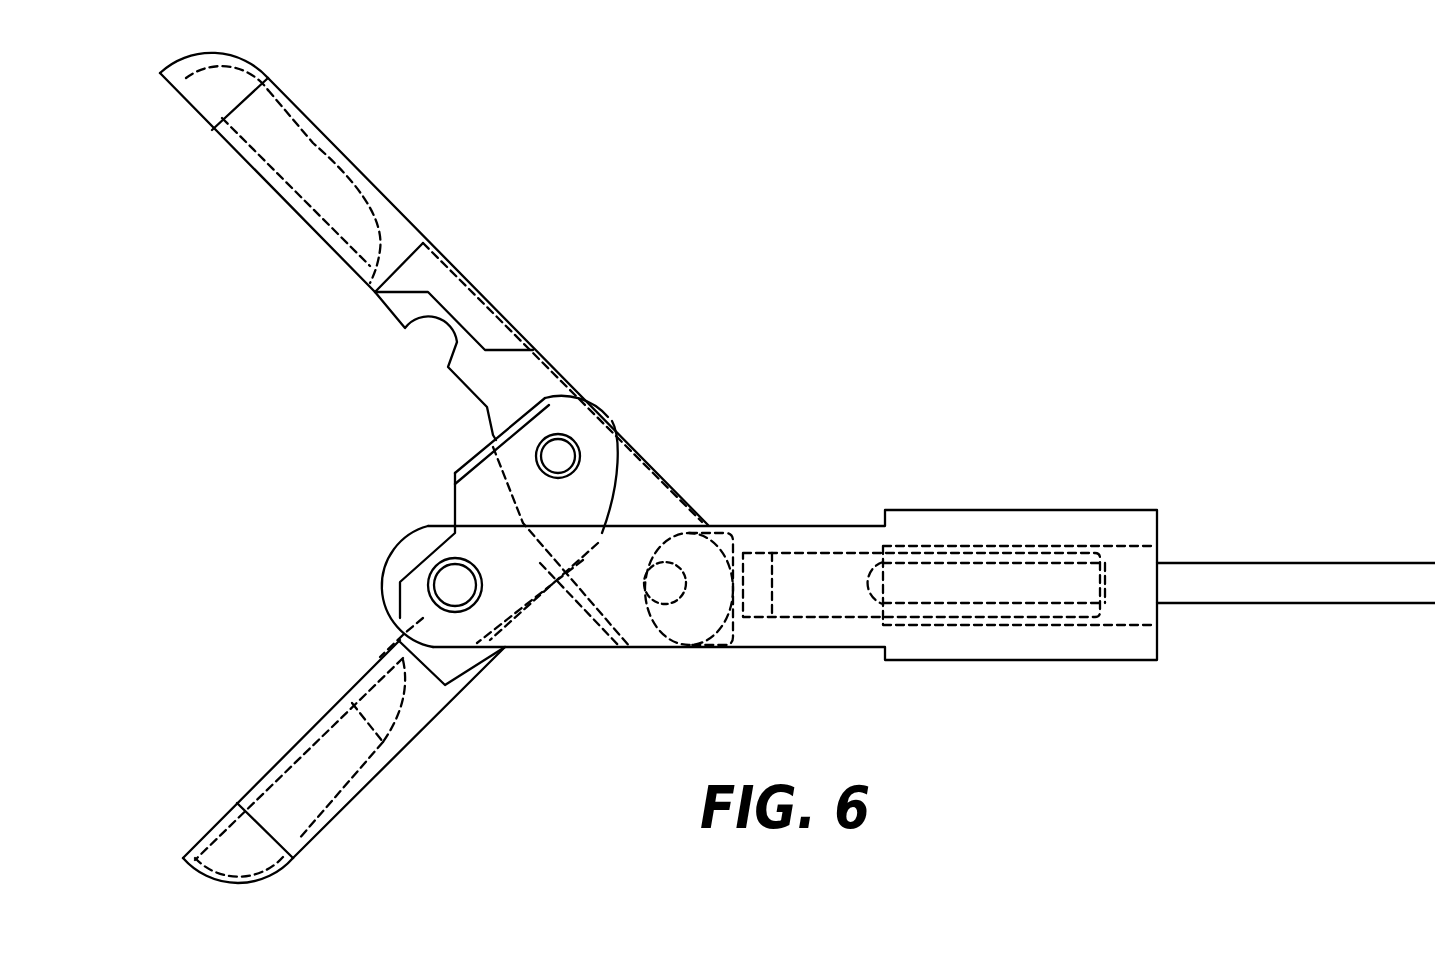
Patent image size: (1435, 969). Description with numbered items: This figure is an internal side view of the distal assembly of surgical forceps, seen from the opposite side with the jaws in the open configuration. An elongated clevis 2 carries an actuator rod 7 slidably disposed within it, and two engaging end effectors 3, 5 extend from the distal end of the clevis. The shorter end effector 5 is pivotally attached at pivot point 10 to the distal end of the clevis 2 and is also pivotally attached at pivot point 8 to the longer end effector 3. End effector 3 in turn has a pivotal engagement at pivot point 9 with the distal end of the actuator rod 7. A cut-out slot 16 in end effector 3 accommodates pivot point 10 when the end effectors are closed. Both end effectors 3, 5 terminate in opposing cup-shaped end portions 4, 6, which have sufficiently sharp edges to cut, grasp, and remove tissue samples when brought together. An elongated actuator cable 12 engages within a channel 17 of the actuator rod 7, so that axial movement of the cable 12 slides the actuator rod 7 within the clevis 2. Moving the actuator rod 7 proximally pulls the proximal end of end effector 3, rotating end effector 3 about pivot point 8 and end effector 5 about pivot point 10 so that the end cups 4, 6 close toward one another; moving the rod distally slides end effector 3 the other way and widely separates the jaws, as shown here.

The clevis 2 is at (797, 542).
The end effector 3 is at (412, 220).
The end portion 4 is at (313, 143).
The end effector 5 is at (347, 803).
The end portion 6 is at (298, 777).
The actuator rod 7 is at (830, 603).
The pivot point 8 is at (573, 457).
The pivot point 9 is at (685, 583).
The pivot point 10 is at (463, 587).
The actuator cable 12 is at (1140, 578).
The cut-out slot 16 is at (437, 340).
The channel 17 is at (880, 585).